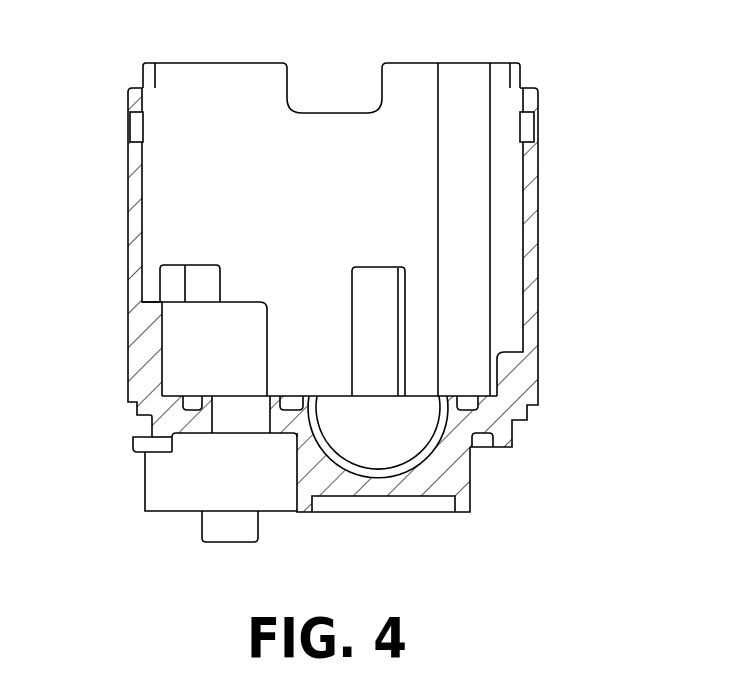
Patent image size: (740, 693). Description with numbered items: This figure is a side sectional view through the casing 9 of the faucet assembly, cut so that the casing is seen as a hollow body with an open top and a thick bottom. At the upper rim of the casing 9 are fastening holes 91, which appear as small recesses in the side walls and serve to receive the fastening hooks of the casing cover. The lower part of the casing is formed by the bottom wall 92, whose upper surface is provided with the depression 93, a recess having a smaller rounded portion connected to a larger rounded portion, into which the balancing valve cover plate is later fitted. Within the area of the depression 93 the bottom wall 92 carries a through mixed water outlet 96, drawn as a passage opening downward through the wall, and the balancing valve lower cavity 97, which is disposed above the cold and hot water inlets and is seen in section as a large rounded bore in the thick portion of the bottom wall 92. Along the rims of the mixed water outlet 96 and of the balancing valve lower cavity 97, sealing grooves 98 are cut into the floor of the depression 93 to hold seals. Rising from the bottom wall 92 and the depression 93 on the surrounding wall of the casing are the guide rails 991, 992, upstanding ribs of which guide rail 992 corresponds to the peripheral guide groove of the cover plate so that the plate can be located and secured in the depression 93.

The casing 9 is at (541, 196).
The fastening holes 91 is at (135, 126).
The guide rail 991 is at (177, 265).
The guide rail 992 is at (377, 287).
The depression 93 is at (287, 370).
The sealing grooves 98 is at (192, 400).
The balancing valve lower cavity 97 is at (407, 417).
The bottom wall 92 is at (297, 423).
The mixed water outlet 96 is at (237, 417).